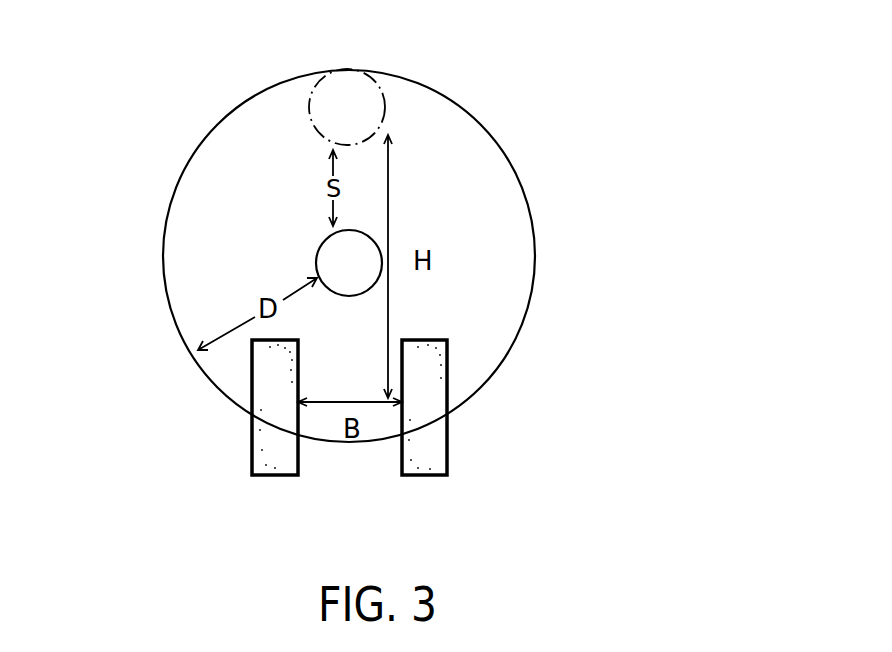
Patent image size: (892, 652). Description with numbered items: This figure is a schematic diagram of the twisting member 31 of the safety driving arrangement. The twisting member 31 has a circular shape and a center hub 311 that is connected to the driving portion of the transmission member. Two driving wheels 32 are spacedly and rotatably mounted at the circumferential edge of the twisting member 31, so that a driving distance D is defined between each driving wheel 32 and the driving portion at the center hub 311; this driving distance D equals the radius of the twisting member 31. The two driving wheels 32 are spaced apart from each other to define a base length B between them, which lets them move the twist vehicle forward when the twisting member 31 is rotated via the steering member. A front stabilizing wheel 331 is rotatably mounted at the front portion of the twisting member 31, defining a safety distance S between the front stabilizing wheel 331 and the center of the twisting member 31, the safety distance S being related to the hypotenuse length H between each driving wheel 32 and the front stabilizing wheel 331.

The twisting member 31 is at (197, 185).
The center hub 311 is at (345, 268).
The driving wheels 32 is at (277, 462).
The front stabilizing wheel 331 is at (323, 72).